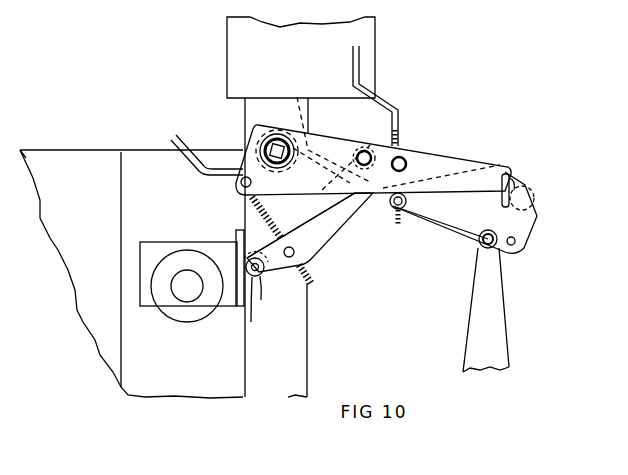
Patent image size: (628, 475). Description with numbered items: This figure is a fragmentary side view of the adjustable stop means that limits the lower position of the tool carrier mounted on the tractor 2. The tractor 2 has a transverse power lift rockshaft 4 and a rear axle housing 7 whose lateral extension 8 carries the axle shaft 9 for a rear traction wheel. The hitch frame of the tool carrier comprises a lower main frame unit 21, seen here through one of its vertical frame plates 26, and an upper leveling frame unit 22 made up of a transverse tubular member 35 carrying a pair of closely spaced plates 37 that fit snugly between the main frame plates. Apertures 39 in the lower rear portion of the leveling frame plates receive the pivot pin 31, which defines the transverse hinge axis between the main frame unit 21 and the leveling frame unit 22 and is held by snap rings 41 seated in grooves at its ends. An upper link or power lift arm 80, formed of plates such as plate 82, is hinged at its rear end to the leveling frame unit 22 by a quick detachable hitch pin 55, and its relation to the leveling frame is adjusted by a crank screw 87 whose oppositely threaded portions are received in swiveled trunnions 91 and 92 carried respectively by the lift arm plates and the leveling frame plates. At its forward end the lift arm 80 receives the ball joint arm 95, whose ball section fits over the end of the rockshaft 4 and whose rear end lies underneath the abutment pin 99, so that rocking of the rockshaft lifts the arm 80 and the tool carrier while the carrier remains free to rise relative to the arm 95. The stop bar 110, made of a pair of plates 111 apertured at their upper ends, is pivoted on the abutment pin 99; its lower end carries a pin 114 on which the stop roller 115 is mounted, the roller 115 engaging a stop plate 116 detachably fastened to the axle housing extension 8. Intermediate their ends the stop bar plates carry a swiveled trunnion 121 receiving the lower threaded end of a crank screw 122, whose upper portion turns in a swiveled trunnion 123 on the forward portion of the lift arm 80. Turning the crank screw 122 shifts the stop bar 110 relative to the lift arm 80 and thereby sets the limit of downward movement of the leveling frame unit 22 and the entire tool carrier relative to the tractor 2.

The tractor 2 is at (80, 147).
The power lift rockshaft 4 is at (271, 136).
The rear axle housing 7 is at (161, 236).
The lateral extension 8 is at (145, 271).
The axle shaft 9 is at (181, 290).
The lower main frame unit 21 is at (511, 356).
The leveling frame unit 22 is at (537, 224).
The frame plate 26 is at (494, 304).
The pivot pin 31 is at (481, 247).
The transverse tubular member 35 is at (526, 187).
The plate 37 is at (447, 226).
The apertures 39 is at (515, 243).
The snap rings 41 is at (497, 250).
The quick detachable hitch pin 55 is at (507, 176).
The upper link member 80 is at (327, 133).
The plate 82 is at (419, 158).
The crank screw 87 is at (380, 100).
The swiveled trunnion 91 is at (401, 156).
The swiveled trunnion 92 is at (396, 212).
The ball joint arm 95 is at (328, 132).
The abutment pin 99 is at (364, 150).
The stop bar 110 is at (330, 237).
The plate 111 is at (333, 206).
The pin 114 is at (274, 298).
The stop roller 115 is at (259, 310).
The stop plate 116 is at (240, 296).
The swiveled trunnion 121 is at (289, 257).
The crank screw 122 is at (205, 166).
The swiveled trunnion 123 is at (243, 187).